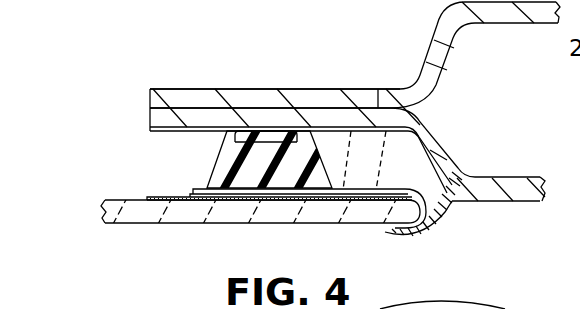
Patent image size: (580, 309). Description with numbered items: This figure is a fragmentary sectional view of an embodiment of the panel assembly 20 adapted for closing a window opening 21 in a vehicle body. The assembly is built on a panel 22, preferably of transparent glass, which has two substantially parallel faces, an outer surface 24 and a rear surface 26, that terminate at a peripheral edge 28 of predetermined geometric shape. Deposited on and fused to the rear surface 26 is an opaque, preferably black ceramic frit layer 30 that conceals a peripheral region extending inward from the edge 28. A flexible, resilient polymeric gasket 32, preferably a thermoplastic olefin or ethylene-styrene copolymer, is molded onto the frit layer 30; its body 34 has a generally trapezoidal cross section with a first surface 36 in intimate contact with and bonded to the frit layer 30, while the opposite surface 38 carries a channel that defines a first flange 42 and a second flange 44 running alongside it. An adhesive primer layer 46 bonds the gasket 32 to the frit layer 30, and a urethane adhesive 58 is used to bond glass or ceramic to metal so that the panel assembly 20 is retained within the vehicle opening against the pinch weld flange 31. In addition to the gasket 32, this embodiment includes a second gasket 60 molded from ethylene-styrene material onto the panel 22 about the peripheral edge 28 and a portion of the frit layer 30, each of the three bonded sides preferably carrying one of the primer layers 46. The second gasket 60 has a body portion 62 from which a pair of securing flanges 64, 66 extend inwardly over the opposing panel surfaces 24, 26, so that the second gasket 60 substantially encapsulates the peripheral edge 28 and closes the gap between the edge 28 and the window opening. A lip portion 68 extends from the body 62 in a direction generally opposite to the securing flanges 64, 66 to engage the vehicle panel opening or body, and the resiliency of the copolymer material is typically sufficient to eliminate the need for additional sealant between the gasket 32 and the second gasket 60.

The panel assembly 20 is at (303, 66).
The window opening 21 is at (150, 125).
The pinch weld flange 31 is at (184, 89).
The second flange 44 is at (226, 131).
The opposite surface 38 is at (292, 133).
The first flange 42 is at (318, 129).
The urethane adhesive 58 is at (378, 89).
The securing flange 66 is at (392, 182).
The second gasket 60 is at (458, 228).
The body portion 62 is at (437, 181).
The lip portion 68 is at (468, 202).
The panel 22 is at (200, 224).
The surface 26 is at (117, 202).
The outer surface 24 is at (145, 224).
The first surface 36 is at (290, 200).
The ceramic frit layer 30 is at (162, 198).
The gasket 32 is at (208, 152).
The adhesive primer layer 46 is at (188, 189).
The body 34 is at (243, 190).
The securing flange 64 is at (412, 237).
The peripheral edge 28 is at (440, 233).